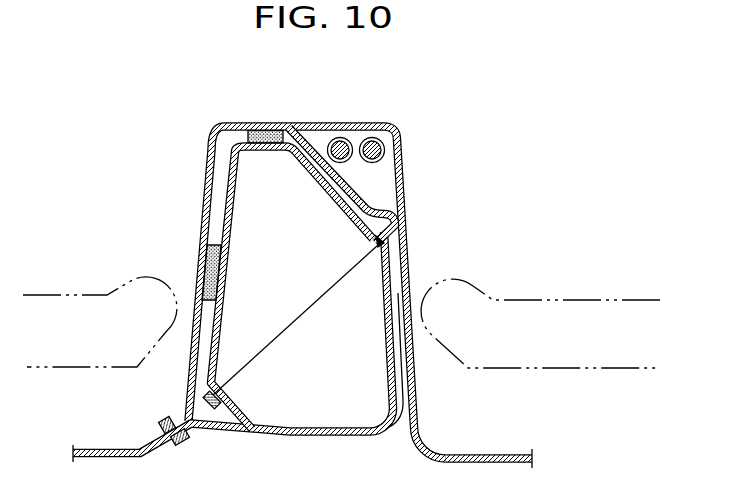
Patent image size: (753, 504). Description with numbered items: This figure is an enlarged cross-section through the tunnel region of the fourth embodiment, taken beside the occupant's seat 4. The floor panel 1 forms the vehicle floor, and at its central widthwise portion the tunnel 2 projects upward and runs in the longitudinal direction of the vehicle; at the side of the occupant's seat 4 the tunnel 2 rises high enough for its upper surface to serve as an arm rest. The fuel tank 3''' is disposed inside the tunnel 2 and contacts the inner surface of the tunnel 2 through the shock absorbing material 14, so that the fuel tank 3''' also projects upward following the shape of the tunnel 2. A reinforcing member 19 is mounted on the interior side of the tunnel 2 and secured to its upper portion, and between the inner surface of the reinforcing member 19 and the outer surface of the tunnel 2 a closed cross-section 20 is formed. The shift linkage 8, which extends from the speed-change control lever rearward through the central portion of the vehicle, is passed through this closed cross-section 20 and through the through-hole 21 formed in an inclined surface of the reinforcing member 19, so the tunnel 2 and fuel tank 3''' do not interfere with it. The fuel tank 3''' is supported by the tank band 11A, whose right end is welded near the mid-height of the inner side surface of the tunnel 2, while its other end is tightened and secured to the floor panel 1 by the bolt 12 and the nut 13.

The floor panel 1 is at (491, 453).
The tunnel 2 is at (378, 210).
The fuel tank 3''' is at (228, 440).
The occupant's seat 4 is at (569, 300).
The shift linkage 8 is at (373, 138).
The tank band 11A is at (257, 437).
The bolt 12 is at (182, 440).
The nut 13 is at (172, 418).
The shock absorbing material 14 is at (258, 132).
The reinforcing member 19 is at (313, 124).
The closed cross-section 20 is at (382, 177).
The through-hole 21 is at (340, 138).